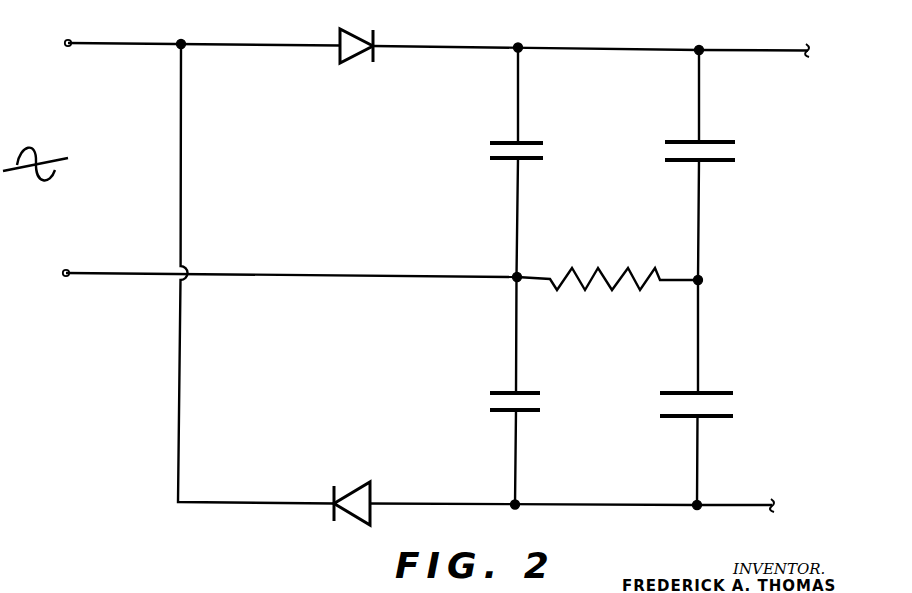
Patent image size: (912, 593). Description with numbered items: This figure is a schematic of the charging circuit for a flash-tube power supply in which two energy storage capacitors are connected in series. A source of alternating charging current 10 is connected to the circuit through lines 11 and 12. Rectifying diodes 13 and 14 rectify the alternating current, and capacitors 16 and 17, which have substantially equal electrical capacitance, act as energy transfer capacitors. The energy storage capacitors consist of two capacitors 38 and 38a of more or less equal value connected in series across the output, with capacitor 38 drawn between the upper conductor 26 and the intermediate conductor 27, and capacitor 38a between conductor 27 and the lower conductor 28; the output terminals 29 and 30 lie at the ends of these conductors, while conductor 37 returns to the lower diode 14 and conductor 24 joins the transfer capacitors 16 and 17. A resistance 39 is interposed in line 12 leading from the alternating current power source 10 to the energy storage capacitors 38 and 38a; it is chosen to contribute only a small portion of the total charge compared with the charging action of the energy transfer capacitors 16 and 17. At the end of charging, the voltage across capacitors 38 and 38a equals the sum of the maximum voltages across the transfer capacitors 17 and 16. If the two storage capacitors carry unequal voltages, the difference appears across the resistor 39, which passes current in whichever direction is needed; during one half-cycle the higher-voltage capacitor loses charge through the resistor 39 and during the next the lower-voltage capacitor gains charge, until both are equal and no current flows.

The source of alternating charging current 10 is at (35, 182).
The line 11 is at (137, 41).
The line 12 is at (108, 280).
The rectifying diode 13 is at (358, 63).
The rectifying diode 14 is at (360, 485).
The energy transfer capacitor 16 is at (533, 152).
The energy transfer capacitor 17 is at (533, 401).
The intermediate junction conductor 24 is at (519, 232).
The upper output conductor 26 is at (583, 22).
The right-hand junction conductor 27 is at (700, 328).
The lower output conductor 28 is at (595, 508).
The lower output terminal 29 is at (722, 510).
The upper output terminal 30 is at (763, 30).
The lower return conductor 37 is at (217, 505).
The energy storage capacitor 38 is at (727, 152).
The energy storage capacitor 38a is at (733, 407).
The resistance 39 is at (628, 268).